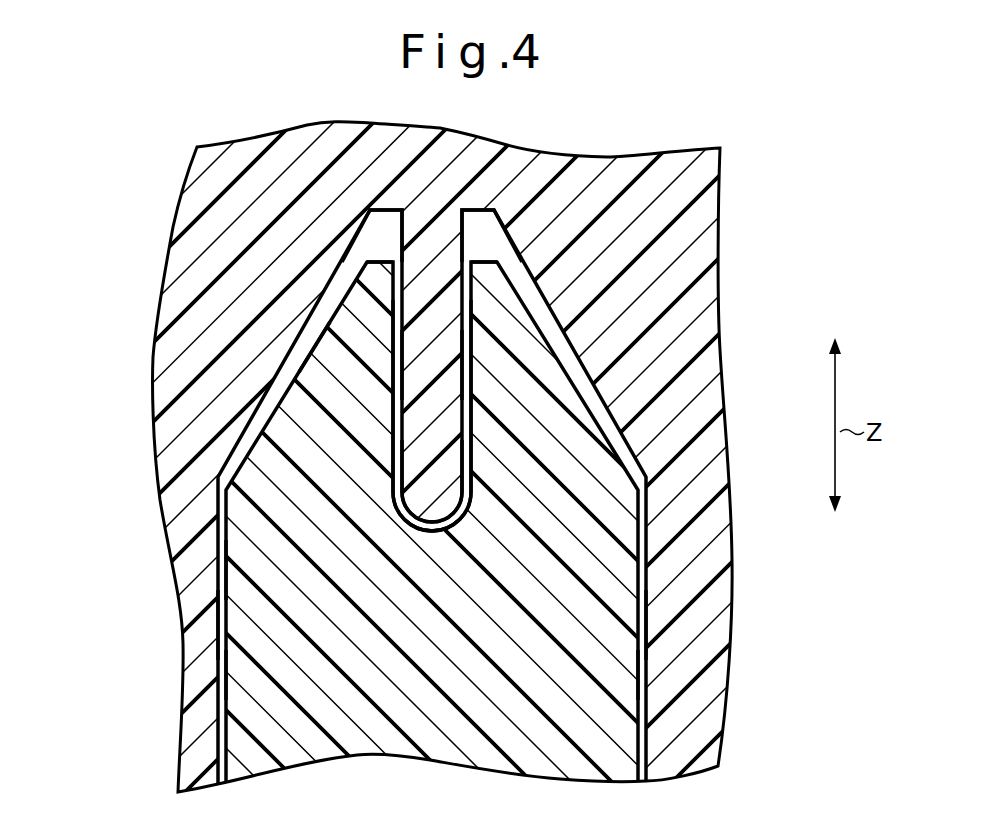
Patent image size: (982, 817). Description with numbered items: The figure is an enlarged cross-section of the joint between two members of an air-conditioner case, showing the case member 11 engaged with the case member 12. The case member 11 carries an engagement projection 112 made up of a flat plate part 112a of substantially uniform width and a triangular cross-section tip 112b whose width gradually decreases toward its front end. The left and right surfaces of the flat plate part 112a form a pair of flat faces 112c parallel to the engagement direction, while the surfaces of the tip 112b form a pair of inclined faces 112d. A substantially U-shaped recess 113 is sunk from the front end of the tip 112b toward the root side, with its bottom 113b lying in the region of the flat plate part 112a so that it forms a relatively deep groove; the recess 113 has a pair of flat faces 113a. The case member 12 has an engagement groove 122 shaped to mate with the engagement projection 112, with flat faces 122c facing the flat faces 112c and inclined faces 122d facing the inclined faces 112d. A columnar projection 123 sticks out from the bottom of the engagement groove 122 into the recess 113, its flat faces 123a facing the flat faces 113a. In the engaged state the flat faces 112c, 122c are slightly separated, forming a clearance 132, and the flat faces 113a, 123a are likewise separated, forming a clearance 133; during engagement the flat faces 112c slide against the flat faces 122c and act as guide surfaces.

The case member 11 is at (491, 458).
The case member 12 is at (240, 186).
The engagement projection 112 is at (283, 708).
The flat plate part 112a is at (260, 568).
The tip 112b is at (283, 465).
The flat faces 112c is at (225, 667).
The inclined faces 112d is at (353, 290).
The recess 113 is at (466, 500).
The flat faces 113a is at (393, 387).
The bottom 113b is at (450, 552).
The engagement groove 122 is at (222, 527).
The flat faces 122c is at (218, 633).
The inclined faces 122d is at (346, 253).
The projection 123 is at (428, 452).
The flat faces 123a is at (393, 367).
The clearance 132 is at (220, 603).
The clearance 133 is at (397, 337).